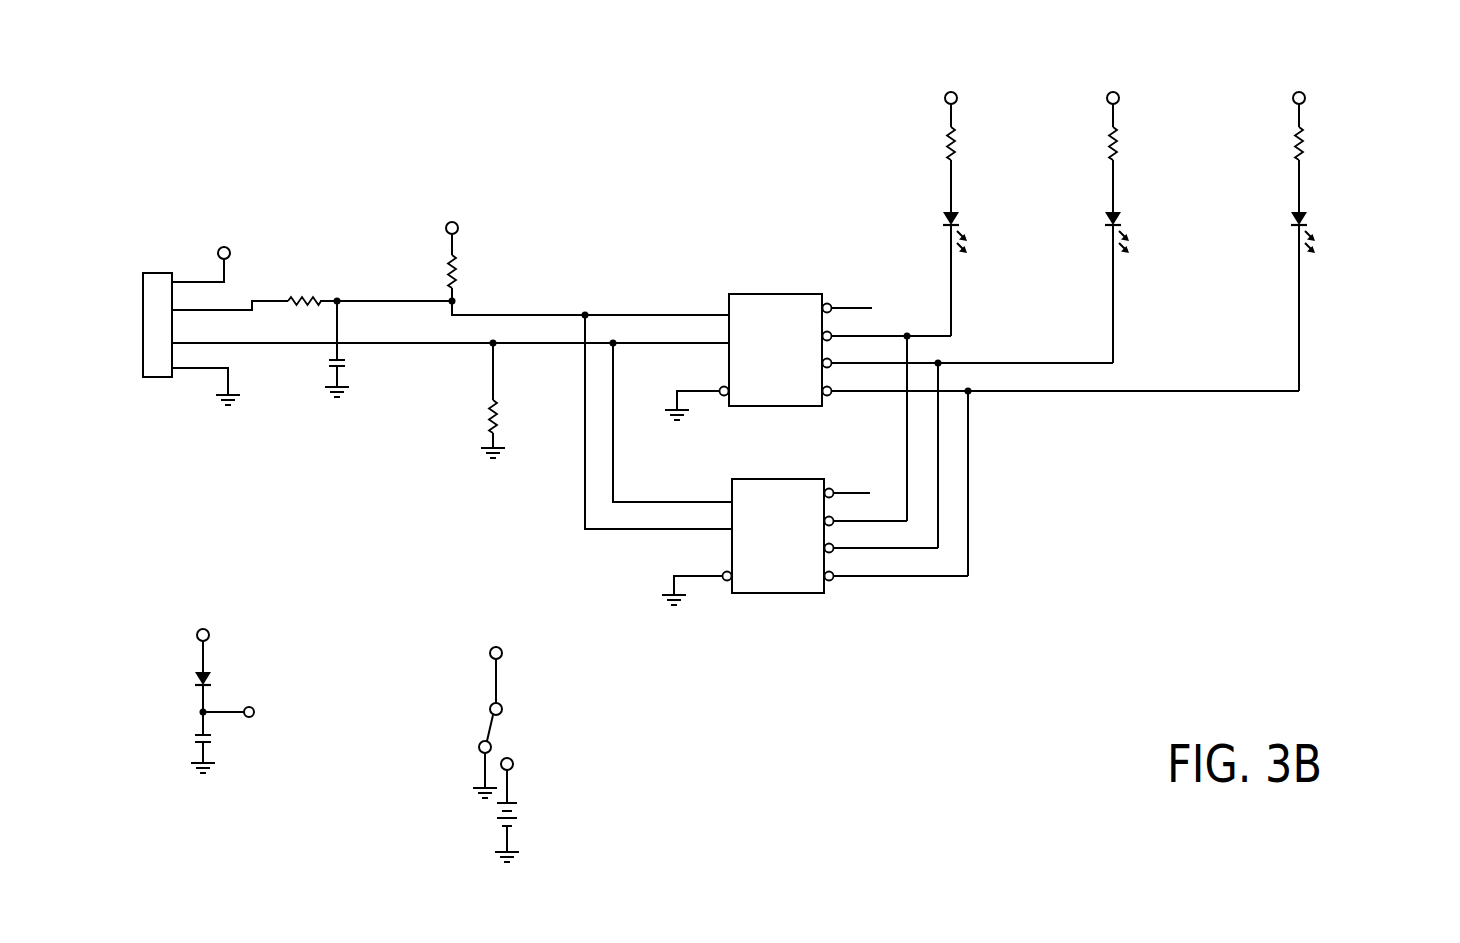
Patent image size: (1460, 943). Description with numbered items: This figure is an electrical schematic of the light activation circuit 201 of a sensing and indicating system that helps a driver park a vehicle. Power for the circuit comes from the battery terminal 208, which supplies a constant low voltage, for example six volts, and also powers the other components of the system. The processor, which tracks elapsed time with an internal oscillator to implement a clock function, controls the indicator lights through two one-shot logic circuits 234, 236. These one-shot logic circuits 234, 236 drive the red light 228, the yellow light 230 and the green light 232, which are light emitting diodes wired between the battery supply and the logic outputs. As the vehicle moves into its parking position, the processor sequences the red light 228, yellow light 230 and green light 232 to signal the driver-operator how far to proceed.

The light activation circuit 201 is at (347, 119).
The battery terminal 208 is at (648, 790).
The red light 228 is at (943, 220).
The yellow light 230 is at (1100, 220).
The green light 232 is at (1313, 220).
The one-shot logic circuit 234 is at (768, 294).
The one-shot logic circuit 236 is at (762, 593).